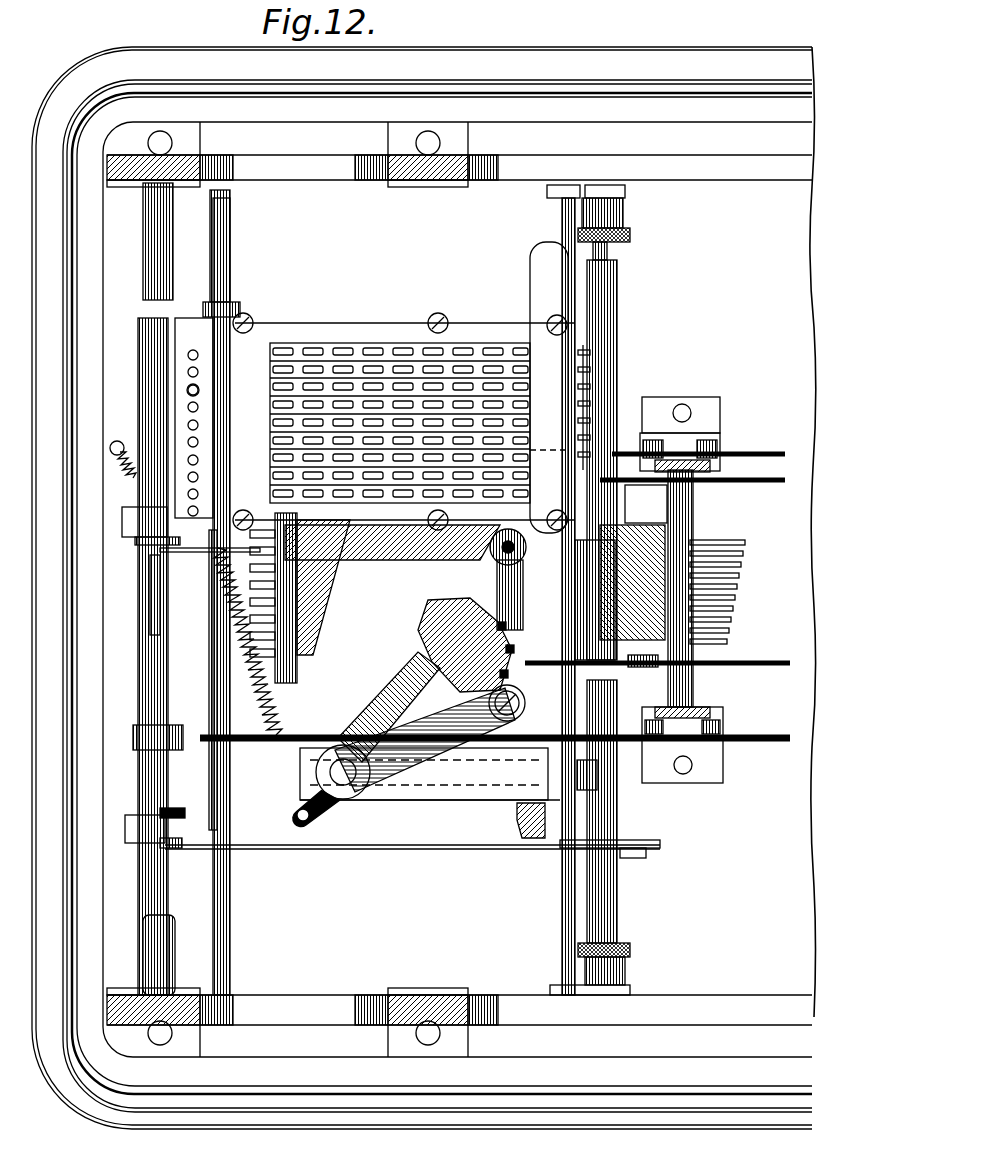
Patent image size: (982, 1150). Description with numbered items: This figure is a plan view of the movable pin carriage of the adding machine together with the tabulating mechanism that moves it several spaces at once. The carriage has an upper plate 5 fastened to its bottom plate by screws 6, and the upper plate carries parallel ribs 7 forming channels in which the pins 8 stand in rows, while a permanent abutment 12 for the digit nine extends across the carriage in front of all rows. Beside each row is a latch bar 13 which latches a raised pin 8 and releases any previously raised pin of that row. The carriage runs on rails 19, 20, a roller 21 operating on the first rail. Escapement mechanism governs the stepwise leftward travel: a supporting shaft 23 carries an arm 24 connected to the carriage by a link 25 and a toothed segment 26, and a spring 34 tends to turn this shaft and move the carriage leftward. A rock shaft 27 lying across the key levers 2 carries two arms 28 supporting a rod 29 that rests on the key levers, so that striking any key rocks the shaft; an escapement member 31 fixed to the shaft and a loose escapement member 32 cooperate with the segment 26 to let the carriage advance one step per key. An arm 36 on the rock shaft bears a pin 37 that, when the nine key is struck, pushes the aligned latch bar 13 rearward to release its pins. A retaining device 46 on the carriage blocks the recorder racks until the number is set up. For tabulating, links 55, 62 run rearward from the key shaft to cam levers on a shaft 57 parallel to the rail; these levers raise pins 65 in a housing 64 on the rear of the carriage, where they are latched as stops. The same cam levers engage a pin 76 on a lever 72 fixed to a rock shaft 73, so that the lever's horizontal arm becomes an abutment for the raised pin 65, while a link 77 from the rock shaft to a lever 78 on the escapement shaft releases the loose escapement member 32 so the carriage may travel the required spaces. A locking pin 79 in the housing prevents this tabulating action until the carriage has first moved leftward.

The key levers 2 is at (730, 612).
The upper plate 5 is at (372, 372).
The bolts or screws 6 is at (440, 323).
The parallel ribs 7 is at (290, 345).
The pins 8 is at (402, 357).
The permanent piece or abutment 12 is at (549, 387).
The latch bar or plate 13 is at (590, 384).
The rail 19 is at (225, 828).
The rail 20 is at (562, 890).
The roller 21 is at (228, 425).
The supporting shaft 23 is at (345, 778).
The arm 24 is at (430, 722).
The link 25 is at (545, 595).
The toothed segment 26 is at (517, 825).
The rock shaft 27 is at (617, 318).
The arms 28 is at (645, 530).
The rod or bar 29 is at (695, 522).
The escapement member 31 is at (520, 752).
The escapement member 32 is at (592, 778).
The spring 34 is at (265, 700).
The arm 36 is at (615, 440).
The pin 37 is at (705, 398).
The stop or retaining device 46 is at (290, 653).
The link 55 is at (770, 440).
The shaft 57 is at (160, 633).
The link 62 is at (760, 483).
The frame or housing 64 is at (186, 355).
The pins 65 is at (186, 388).
The lever 72 is at (122, 508).
The rock shaft 73 is at (150, 566).
The pin 76 is at (175, 814).
The link 77 is at (378, 850).
The lever 78 is at (640, 843).
The pin 79 is at (150, 505).